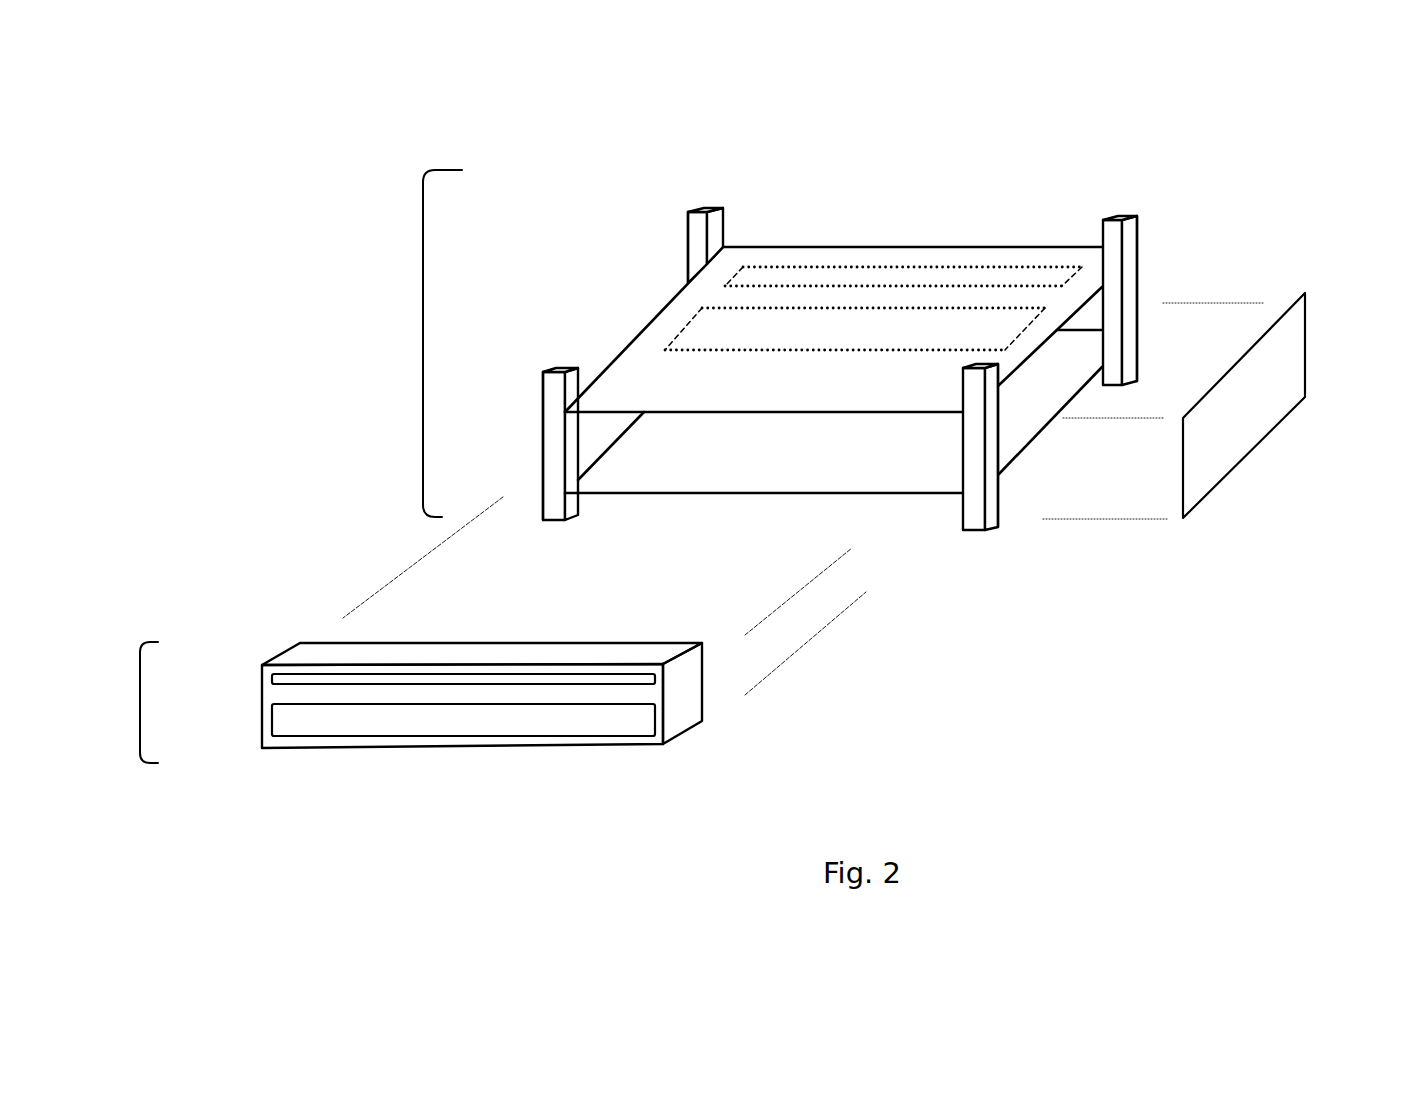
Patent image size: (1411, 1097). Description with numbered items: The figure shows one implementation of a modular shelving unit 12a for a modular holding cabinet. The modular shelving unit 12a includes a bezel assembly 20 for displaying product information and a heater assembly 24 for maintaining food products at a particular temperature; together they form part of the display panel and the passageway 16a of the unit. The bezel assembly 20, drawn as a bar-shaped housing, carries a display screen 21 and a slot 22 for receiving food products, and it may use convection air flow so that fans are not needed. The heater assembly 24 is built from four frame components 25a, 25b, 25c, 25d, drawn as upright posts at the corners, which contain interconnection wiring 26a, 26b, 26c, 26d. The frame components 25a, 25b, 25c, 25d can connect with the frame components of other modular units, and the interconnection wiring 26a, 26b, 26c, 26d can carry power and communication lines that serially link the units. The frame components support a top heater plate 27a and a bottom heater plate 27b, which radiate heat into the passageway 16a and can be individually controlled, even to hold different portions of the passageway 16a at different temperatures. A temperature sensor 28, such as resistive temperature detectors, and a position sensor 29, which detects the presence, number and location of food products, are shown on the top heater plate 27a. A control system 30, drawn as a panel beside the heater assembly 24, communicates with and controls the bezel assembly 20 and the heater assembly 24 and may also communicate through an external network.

The modular shelving unit 12a is at (990, 115).
The passageway 16a is at (716, 460).
The bezel assembly 20 is at (384, 702).
The display screen 21 is at (265, 683).
The slot 22 is at (265, 722).
The heater assembly 24 is at (423, 333).
The frame component 25a is at (688, 243).
The frame component 25b is at (1137, 272).
The frame component 25c is at (998, 452).
The frame component 25d is at (543, 420).
The interconnection wiring 26a is at (700, 211).
The interconnection wiring 26b is at (1112, 217).
The interconnection wiring 26c is at (995, 362).
The interconnection wiring 26d is at (555, 369).
The top heater plate 27a is at (785, 247).
The bottom heater plate 27b is at (763, 497).
The temperature sensor 28 is at (862, 267).
The position sensor 29 is at (922, 308).
The control system 30 is at (1305, 365).